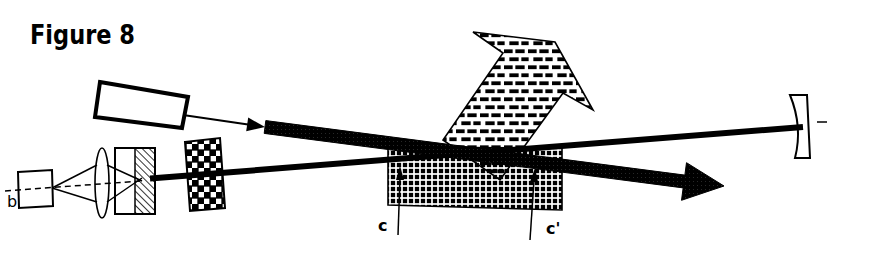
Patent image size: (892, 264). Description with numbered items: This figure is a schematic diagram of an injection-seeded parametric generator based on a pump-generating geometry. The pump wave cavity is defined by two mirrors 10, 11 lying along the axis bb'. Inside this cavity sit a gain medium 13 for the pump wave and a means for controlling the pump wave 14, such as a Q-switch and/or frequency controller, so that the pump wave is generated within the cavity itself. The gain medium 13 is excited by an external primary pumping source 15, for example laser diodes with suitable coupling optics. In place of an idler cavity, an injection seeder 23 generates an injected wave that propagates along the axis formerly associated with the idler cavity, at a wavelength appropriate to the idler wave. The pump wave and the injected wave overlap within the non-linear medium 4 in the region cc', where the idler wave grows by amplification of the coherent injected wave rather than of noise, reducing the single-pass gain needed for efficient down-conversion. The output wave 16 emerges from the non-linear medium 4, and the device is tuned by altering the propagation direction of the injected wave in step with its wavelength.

The external primary pumping source 15 is at (43, 177).
The mirror 10 is at (135, 194).
The gain medium 13 is at (476, 184).
The means for controlling the pump wave 14 is at (213, 189).
The injection seeder 23 is at (180, 101).
The deflected beam 16 is at (519, 106).
The non-linear medium 4 is at (475, 191).
The mirror 11 is at (808, 106).